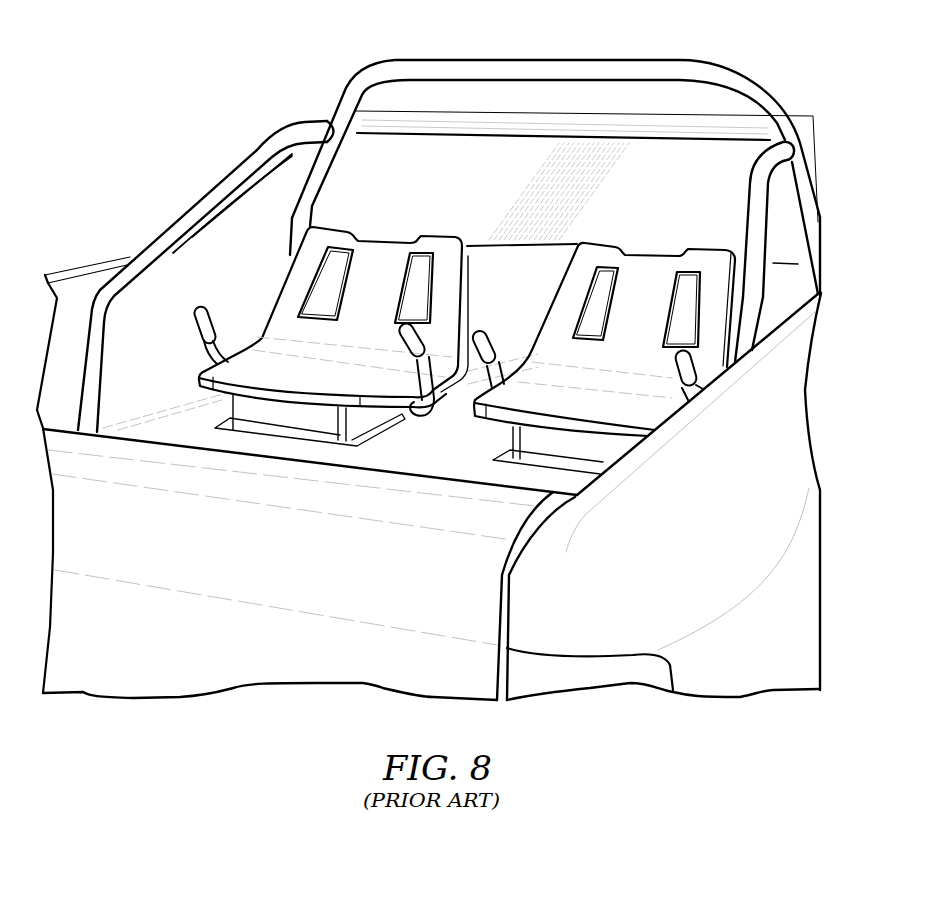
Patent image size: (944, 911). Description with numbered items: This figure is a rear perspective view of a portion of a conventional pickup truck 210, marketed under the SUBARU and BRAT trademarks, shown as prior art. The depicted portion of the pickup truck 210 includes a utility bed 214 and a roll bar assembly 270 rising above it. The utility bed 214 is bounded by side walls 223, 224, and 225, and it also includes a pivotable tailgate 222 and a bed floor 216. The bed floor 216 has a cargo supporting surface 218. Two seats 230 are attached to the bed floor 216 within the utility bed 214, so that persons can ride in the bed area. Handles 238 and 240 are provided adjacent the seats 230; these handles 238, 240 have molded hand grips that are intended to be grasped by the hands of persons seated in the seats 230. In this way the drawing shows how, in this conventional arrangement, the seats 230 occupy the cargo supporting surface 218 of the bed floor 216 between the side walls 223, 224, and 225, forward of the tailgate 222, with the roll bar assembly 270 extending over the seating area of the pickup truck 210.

The pickup truck 210 is at (231, 58).
The utility bed 214 is at (136, 228).
The bed floor 216 is at (402, 460).
The cargo supporting surface 218 is at (472, 478).
The pivotable tailgate 222 is at (138, 679).
The side wall 223 is at (75, 293).
The side wall 224 is at (797, 358).
The side wall 225 is at (490, 261).
The seat 230 is at (380, 245).
The handle 238 is at (198, 326).
The handle 240 is at (400, 352).
The roll bar assembly 270 is at (386, 62).